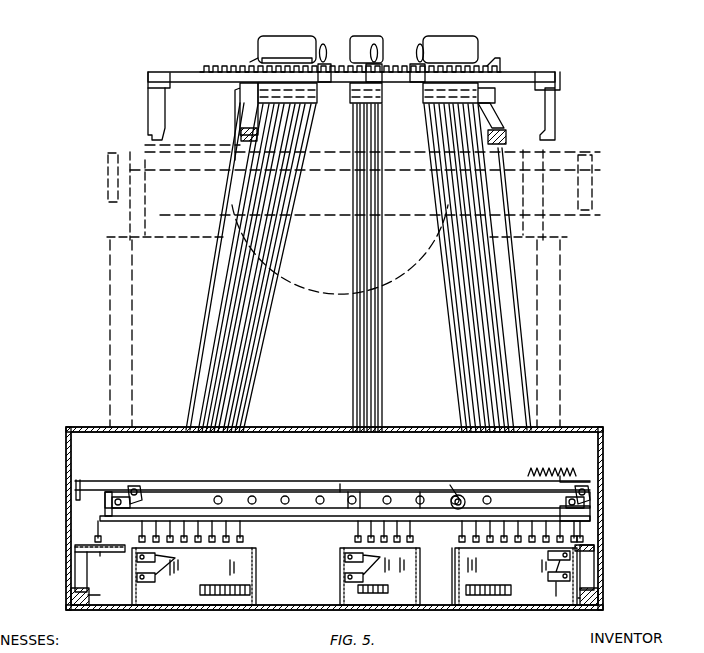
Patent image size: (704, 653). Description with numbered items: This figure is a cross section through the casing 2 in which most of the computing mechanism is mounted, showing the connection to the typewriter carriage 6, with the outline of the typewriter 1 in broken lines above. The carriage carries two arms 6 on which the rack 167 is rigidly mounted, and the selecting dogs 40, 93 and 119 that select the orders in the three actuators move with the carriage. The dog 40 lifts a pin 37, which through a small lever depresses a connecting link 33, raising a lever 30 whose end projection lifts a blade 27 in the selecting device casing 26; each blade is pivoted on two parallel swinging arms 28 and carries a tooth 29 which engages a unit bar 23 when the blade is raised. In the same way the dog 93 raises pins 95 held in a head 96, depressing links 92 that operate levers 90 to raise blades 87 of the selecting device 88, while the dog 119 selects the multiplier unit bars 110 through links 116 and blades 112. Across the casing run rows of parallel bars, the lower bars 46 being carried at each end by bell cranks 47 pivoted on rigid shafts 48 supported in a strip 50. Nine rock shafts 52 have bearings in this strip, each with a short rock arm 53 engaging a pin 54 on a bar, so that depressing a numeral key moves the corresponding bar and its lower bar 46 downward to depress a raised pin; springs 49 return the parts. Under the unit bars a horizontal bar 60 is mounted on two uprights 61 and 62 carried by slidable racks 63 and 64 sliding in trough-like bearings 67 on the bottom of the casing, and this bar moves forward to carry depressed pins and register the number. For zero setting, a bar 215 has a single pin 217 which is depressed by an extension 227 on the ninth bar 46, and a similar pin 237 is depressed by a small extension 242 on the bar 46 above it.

The typewriter 1 is at (562, 312).
The casing 2 is at (66, 436).
The typewriter carriage 6 is at (148, 100).
The unit bar 23 is at (462, 530).
The casing of selecting device 26 is at (455, 568).
The movable blade 27 is at (516, 576).
The swinging arm 28 is at (556, 588).
The tooth 29 is at (550, 560).
The lever 30 is at (506, 592).
The connecting link 33 is at (450, 312).
The pin 37 is at (482, 58).
The selecting dog 40 is at (415, 62).
The lower parallel bar 46 is at (300, 492).
The bell crank 47 is at (142, 486).
The rigid shaft 48 is at (116, 496).
The spring 49 is at (582, 472).
The strip 50 is at (412, 482).
The rock shaft 52 is at (424, 496).
The rock arm 53 is at (462, 496).
The pin 54 is at (452, 490).
The horizontal bar 60 is at (98, 556).
The upright 61 is at (594, 570).
The upright 62 is at (75, 574).
The slidable rack 63 is at (598, 594).
The slidable rack 64 is at (71, 598).
The trough-like bearing 67 is at (92, 600).
The blade 87 is at (160, 585).
The selecting device 88 is at (256, 566).
The lever 90 is at (252, 590).
The link 92 is at (258, 345).
The selecting dog 93 is at (326, 60).
The pin 95 is at (250, 60).
The head 96 is at (298, 36).
The unit bar 110 is at (354, 540).
The blade 112 is at (386, 586).
The link 116 is at (384, 396).
The selecting dog 119 is at (378, 60).
The rack 167 is at (236, 52).
The bar 215 is at (75, 549).
The pin 217 is at (96, 528).
The extension 227 is at (108, 510).
The pin 237 is at (584, 530).
The extension 242 is at (592, 516).